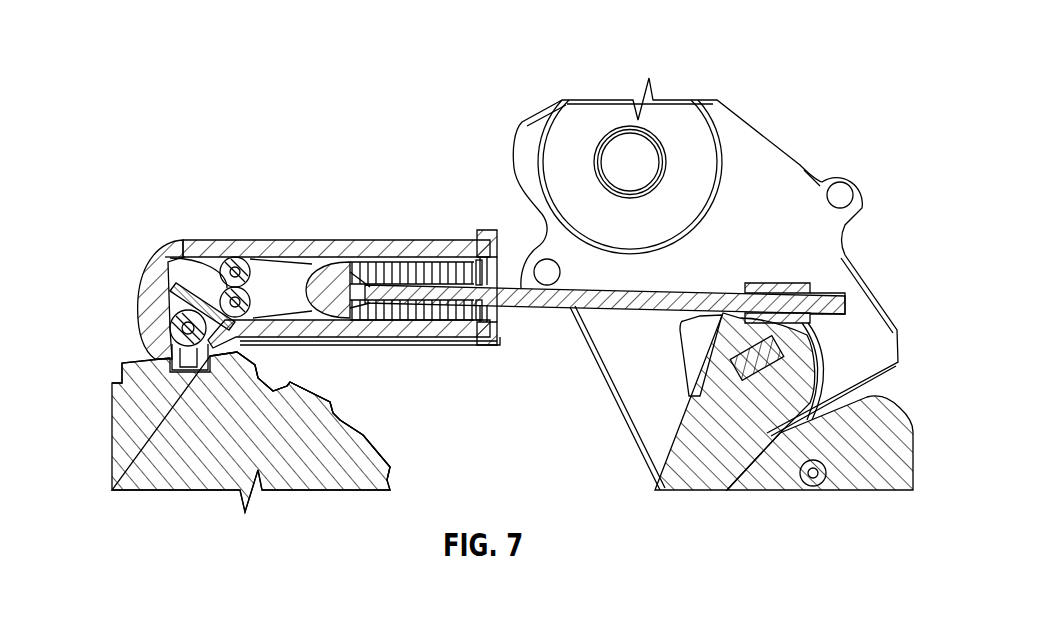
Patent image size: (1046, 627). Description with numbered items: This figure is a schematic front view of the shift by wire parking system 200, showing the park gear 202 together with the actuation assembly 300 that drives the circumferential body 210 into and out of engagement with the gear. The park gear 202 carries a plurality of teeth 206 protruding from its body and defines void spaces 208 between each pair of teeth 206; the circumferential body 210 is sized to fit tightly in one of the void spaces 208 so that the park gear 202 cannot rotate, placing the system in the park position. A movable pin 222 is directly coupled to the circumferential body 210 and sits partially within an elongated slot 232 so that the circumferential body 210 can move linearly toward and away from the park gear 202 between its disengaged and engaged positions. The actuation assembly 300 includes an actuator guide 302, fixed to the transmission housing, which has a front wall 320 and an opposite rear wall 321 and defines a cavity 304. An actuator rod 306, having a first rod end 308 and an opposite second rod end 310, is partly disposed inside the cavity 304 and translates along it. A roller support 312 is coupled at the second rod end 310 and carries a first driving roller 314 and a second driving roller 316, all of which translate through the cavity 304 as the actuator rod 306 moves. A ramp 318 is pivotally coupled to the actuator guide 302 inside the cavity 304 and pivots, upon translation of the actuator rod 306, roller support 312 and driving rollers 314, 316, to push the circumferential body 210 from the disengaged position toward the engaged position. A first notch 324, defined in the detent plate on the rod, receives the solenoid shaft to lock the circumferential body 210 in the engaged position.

The shift by wire parking system 200 is at (80, 390).
The park gear 202 is at (128, 463).
The teeth 206 is at (307, 393).
The void spaces 208 is at (337, 430).
The circumferential body 210 is at (246, 350).
The movable pin 222 is at (142, 343).
The elongated slot 232 is at (197, 365).
The actuation assembly 300 is at (822, 60).
The actuator guide 302 is at (318, 243).
The cavity 304 is at (188, 259).
The actuator rod 306 is at (700, 296).
The first rod end 308 is at (898, 332).
The second rod end 310 is at (368, 287).
The roller support 312 is at (272, 272).
The first driving roller 314 is at (192, 261).
The second driving roller 316 is at (236, 262).
The ramp 318 is at (170, 329).
The front wall 320 is at (140, 280).
The rear wall 321 is at (493, 315).
The first notch 324 is at (808, 400).